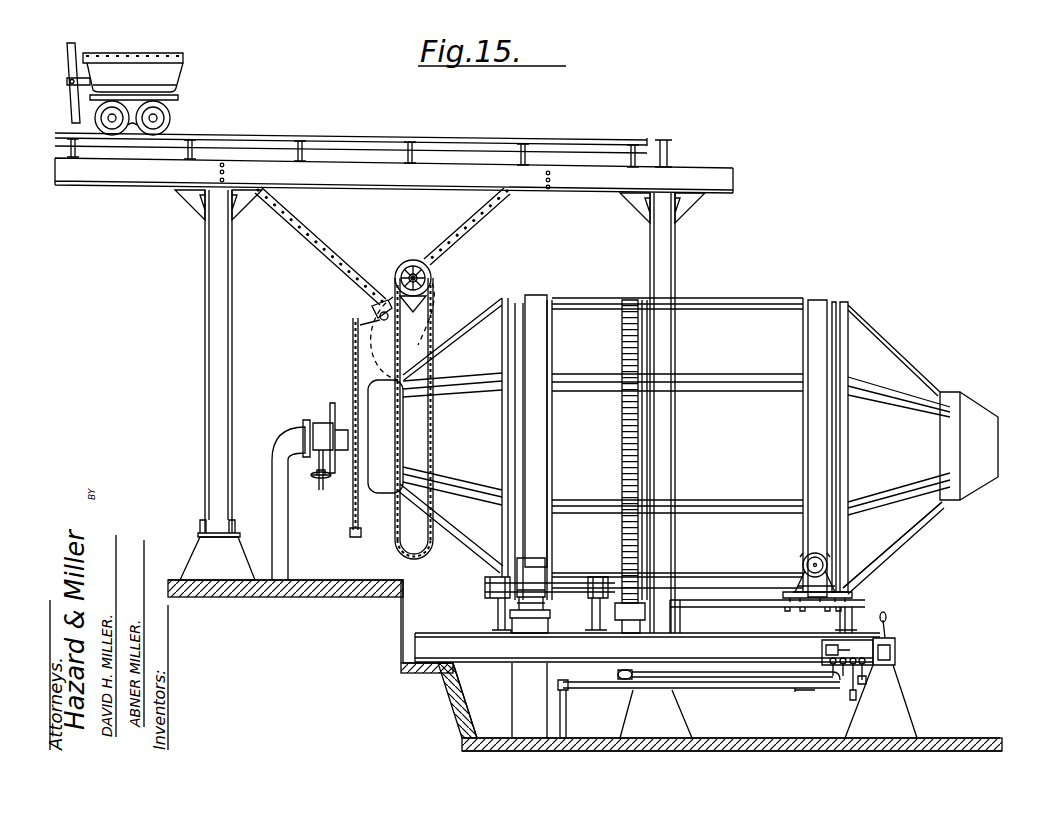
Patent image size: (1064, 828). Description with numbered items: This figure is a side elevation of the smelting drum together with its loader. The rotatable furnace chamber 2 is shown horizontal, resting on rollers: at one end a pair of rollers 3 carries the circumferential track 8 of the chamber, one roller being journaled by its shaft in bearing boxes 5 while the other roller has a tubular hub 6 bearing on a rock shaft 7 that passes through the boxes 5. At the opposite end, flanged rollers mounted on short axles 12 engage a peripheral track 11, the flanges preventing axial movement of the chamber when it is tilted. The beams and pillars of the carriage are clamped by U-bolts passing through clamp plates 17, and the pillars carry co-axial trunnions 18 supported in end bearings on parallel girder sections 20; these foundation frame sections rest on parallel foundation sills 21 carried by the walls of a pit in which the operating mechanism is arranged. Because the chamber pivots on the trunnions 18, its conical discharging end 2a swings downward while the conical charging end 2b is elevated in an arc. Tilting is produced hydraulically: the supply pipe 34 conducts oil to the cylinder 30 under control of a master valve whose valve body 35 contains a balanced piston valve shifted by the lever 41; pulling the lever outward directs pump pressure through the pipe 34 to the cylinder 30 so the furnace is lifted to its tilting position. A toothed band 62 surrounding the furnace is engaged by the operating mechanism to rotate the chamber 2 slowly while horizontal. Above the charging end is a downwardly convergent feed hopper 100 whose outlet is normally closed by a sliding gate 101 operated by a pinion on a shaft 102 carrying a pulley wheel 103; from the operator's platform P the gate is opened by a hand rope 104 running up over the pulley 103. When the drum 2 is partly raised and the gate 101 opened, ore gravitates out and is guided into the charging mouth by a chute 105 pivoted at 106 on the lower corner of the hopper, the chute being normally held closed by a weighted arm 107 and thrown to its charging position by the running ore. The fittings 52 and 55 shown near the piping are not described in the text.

The furnace chamber 2 is at (698, 323).
The discharging end 2a is at (883, 540).
The charging end 2b is at (392, 495).
The rollers 3 is at (533, 572).
The bearing boxes 5 is at (496, 599).
The tubular hub 6 is at (585, 592).
The rock shaft 7 is at (486, 585).
The circumferential track 8 is at (538, 300).
The peripheral track 11 is at (812, 305).
The short axles 12 is at (832, 578).
The clamp plates 17 is at (846, 596).
The trunnions 18 is at (806, 560).
The girder sections 20 is at (828, 622).
The foundation sills 21 is at (765, 658).
The cylinder 30 is at (524, 703).
The supply pipe 34 is at (567, 727).
The valve body 35 is at (825, 653).
The lever 41 is at (890, 650).
The pipe connection 52 is at (807, 690).
The pipe fitting 55 is at (863, 684).
The toothed band 62 is at (633, 458).
The feed hopper 100 is at (384, 300).
The sliding gate 101 is at (396, 290).
The shaft 102 is at (430, 265).
The pulley wheel 103 is at (443, 272).
The hand rope 104 is at (410, 556).
The chute 105 is at (372, 302).
The pivot 106 is at (380, 317).
The weighted arm 107 is at (352, 328).
The operator's platform P is at (316, 580).